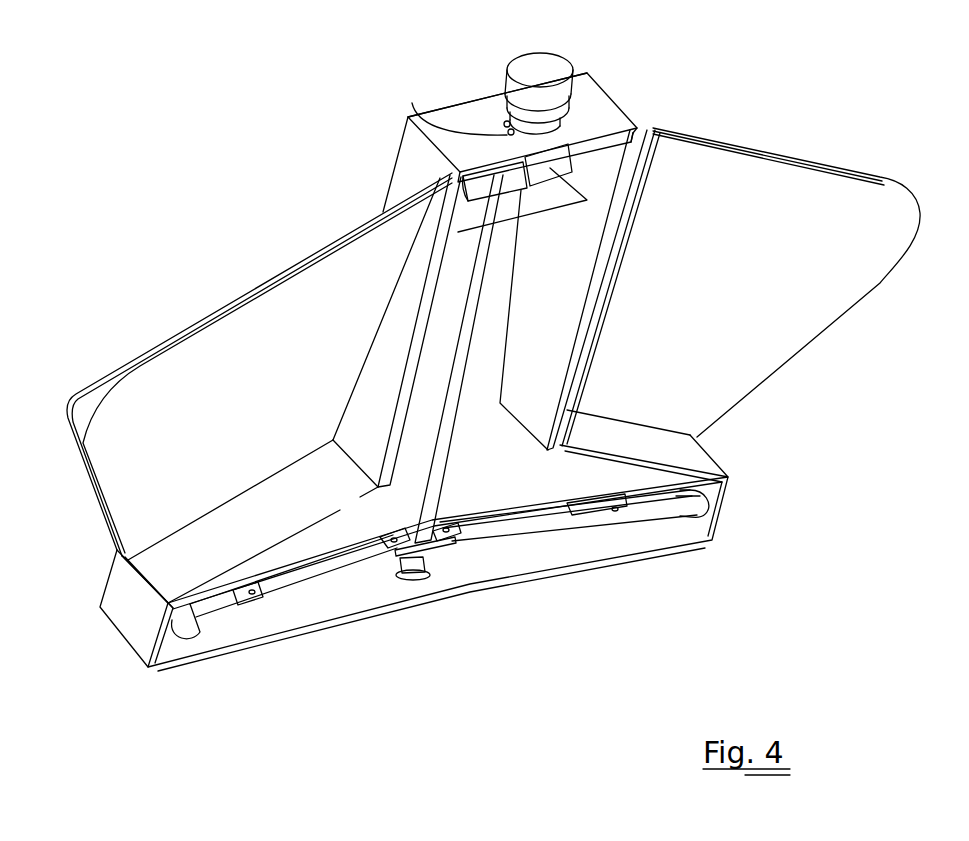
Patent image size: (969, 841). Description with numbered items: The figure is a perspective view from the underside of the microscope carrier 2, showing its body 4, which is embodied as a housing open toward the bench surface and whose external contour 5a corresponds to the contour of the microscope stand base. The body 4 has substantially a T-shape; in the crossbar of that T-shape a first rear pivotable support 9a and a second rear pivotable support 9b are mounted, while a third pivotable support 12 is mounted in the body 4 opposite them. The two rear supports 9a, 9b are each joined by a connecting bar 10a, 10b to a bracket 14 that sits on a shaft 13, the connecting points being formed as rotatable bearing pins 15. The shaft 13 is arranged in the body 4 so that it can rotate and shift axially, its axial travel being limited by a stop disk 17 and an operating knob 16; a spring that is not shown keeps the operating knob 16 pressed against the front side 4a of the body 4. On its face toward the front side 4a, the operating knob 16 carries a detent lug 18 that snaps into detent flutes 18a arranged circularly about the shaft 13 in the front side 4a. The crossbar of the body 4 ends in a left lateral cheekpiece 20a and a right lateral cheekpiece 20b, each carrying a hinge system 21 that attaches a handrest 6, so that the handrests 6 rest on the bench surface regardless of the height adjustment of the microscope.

The microscope carrier 2 is at (546, 612).
The body 4 is at (413, 157).
The front side of body 4a is at (516, 83).
The external contour 5a is at (587, 302).
The handrest 6 is at (236, 432).
The first rear pivotable support 9a is at (215, 610).
The second rear pivotable support 9b is at (673, 510).
The connecting bar 10a is at (330, 567).
The connecting bar 10b is at (540, 520).
The third pivotable support 12 is at (637, 127).
The shaft 13 is at (457, 395).
The bracket 14 is at (443, 560).
The rotatable bearing pin 15 is at (233, 592).
The operating knob 16 is at (542, 76).
The stop disk 17 is at (403, 580).
The detent lug 18 is at (507, 127).
The detent flutes 18a is at (450, 105).
The left lateral cheekpiece 20a is at (172, 574).
The right lateral cheekpiece 20b is at (700, 457).
The hinge system 21 is at (197, 527).